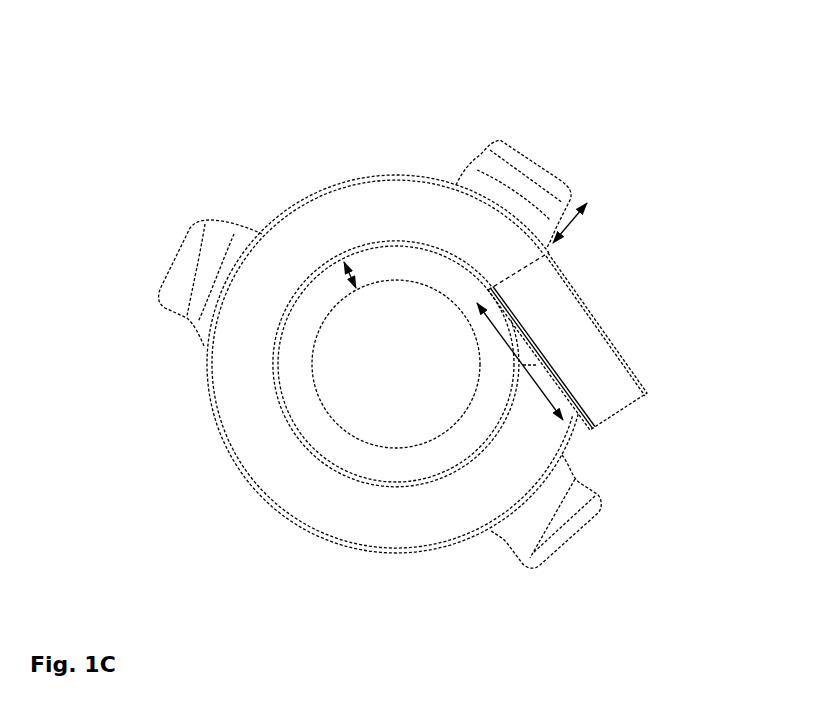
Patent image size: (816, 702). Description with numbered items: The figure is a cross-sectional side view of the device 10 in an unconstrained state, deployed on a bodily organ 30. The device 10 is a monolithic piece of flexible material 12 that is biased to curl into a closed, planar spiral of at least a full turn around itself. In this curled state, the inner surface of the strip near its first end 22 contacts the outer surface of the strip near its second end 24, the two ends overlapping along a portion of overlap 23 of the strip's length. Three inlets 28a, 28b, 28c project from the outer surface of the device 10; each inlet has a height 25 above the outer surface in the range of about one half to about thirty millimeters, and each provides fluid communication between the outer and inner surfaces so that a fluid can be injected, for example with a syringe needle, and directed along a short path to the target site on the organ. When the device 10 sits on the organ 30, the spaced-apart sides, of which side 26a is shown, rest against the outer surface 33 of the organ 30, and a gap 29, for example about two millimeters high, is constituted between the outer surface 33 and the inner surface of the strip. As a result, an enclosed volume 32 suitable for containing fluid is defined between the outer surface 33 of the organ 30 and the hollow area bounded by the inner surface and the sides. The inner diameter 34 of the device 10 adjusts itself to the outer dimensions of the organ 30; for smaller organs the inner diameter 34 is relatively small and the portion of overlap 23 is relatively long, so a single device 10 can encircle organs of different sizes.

The device 10 is at (652, 95).
The piece of flexible material 12 is at (333, 173).
The first end 22 is at (627, 365).
The portion of overlap 23 is at (543, 398).
The second end 24 is at (522, 353).
The height 25 is at (585, 227).
The side 26a is at (603, 390).
The inlet 28a is at (172, 258).
The inlet 28b is at (535, 160).
The inlet 28c is at (568, 545).
The gap 29 is at (350, 274).
The bodily organ 30 is at (368, 372).
The enclosed volume 32 is at (322, 293).
The outer surface of organ 33 is at (335, 423).
The inner diameter 34 is at (288, 320).